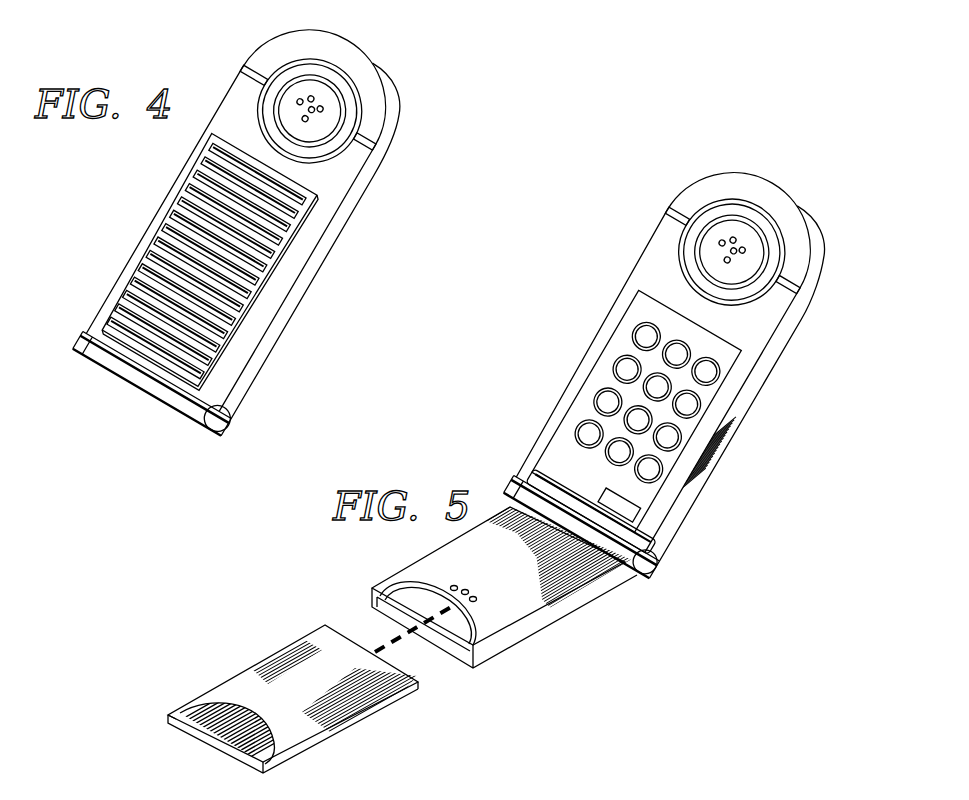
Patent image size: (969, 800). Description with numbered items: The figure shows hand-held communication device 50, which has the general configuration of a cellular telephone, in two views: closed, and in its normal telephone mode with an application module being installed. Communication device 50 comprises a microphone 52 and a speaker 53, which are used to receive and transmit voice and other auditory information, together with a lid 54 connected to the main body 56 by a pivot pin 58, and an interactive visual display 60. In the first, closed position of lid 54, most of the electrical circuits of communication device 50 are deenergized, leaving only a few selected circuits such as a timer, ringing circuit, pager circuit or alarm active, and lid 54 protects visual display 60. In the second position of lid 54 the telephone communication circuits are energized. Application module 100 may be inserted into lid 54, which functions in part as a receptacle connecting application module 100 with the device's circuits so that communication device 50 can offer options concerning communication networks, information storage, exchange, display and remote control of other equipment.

In FIG. 4, the communication device 50 is at (470, 90).
In FIG. 5, the communication device 50 is at (805, 479).
In FIG. 5, the microphone 52 is at (477, 577).
In FIG. 4, the speaker 53 is at (316, 63).
In FIG. 5, the speaker 53 is at (731, 208).
In FIG. 4, the lid 54 is at (247, 310).
In FIG. 5, the lid 54 is at (540, 622).
In FIG. 4, the main body 56 is at (341, 277).
In FIG. 5, the main body 56 is at (738, 413).
In FIG. 4, the pivot pin 58 is at (224, 418).
In FIG. 5, the pivot pin 58 is at (651, 562).
In FIG. 5, the interactive visual display 60 is at (727, 346).
In FIG. 5, the application module 100 is at (314, 731).